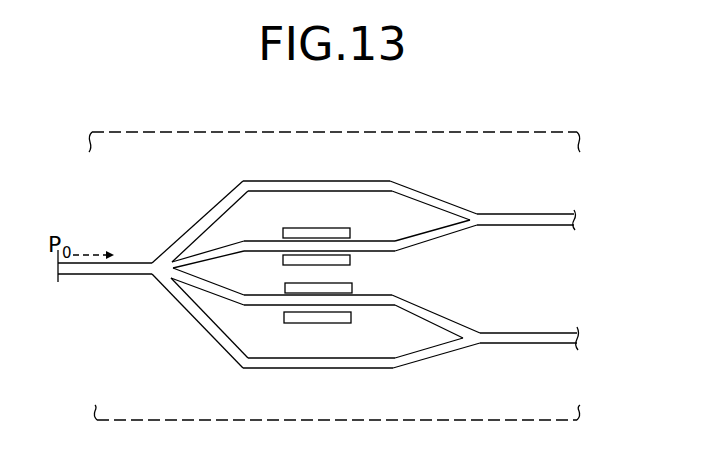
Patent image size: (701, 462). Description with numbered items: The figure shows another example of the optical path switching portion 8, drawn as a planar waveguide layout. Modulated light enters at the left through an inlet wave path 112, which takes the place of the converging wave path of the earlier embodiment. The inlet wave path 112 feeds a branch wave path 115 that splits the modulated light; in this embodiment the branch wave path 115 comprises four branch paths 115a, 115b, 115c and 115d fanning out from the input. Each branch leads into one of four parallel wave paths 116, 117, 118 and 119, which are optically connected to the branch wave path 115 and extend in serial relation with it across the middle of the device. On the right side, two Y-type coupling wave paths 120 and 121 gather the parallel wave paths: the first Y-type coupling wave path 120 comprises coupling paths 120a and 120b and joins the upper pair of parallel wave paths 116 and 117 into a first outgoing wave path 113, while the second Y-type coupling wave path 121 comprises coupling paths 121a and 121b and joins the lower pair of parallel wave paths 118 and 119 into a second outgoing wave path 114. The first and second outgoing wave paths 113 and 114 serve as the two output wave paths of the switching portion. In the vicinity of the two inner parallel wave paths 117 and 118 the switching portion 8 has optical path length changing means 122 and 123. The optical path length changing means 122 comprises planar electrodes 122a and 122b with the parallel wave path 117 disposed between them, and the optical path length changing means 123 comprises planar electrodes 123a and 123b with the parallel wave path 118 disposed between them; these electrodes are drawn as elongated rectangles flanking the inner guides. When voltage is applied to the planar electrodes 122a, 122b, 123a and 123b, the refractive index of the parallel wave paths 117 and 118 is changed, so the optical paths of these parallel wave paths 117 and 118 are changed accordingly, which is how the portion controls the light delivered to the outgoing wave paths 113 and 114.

The optical path switching portion 8 is at (181, 124).
The inlet wave path 112 is at (98, 276).
The first outgoing wave path 113 is at (532, 215).
The second outgoing wave path 114 is at (528, 345).
The branch wave path 115 is at (194, 281).
The branch path 115a is at (217, 217).
The branch path 115b is at (213, 251).
The branch path 115c is at (198, 286).
The branch path 115d is at (214, 331).
The parallel wave path 116 is at (322, 181).
The parallel wave path 117 is at (368, 249).
The parallel wave path 118 is at (373, 297).
The parallel wave path 119 is at (375, 369).
The Y-type coupling wave path 120 is at (463, 205).
The coupling path 120a is at (428, 195).
The coupling path 120b is at (454, 234).
The Y-type coupling wave path 121 is at (452, 346).
The coupling path 121a is at (424, 318).
The coupling path 121b is at (446, 353).
The optical path length changing means 122 is at (354, 235).
The planar electrode 122a is at (331, 228).
The planar electrode 122b is at (351, 259).
The optical path length changing means 123 is at (286, 311).
The planar electrode 123a is at (290, 288).
The planar electrode 123b is at (332, 324).